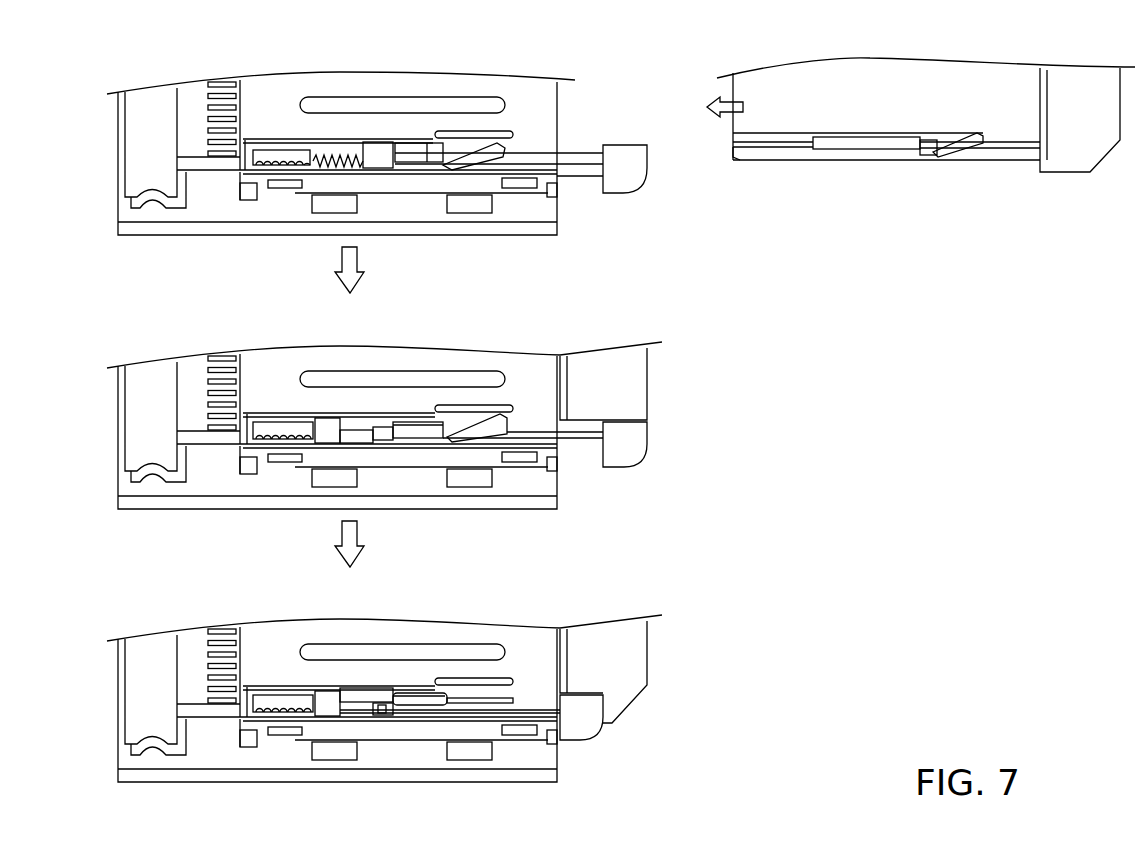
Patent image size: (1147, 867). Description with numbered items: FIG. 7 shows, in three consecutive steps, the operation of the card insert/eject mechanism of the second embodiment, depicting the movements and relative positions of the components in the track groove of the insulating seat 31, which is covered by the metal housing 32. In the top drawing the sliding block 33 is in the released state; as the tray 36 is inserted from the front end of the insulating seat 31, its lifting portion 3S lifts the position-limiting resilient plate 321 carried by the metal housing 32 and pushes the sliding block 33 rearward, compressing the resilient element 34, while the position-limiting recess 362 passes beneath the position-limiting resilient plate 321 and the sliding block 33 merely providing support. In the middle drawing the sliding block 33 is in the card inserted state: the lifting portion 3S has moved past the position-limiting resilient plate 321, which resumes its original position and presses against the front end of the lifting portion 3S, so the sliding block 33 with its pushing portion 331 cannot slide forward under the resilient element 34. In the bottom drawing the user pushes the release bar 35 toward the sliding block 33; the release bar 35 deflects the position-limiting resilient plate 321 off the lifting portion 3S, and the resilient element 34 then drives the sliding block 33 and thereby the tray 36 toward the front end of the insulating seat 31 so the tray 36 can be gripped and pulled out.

The insulating seat 31 is at (263, 467).
The metal housing 32 is at (269, 92).
The sliding block 33 is at (417, 157).
The pushing portion 331 is at (380, 147).
The resilient element 34 is at (330, 157).
The position-limiting resilient plate 321 is at (477, 153).
The lifting portion 3S is at (413, 417).
The release bar 35 is at (625, 153).
The tray 36 is at (610, 367).
The position-limiting recess 362 is at (771, 170).